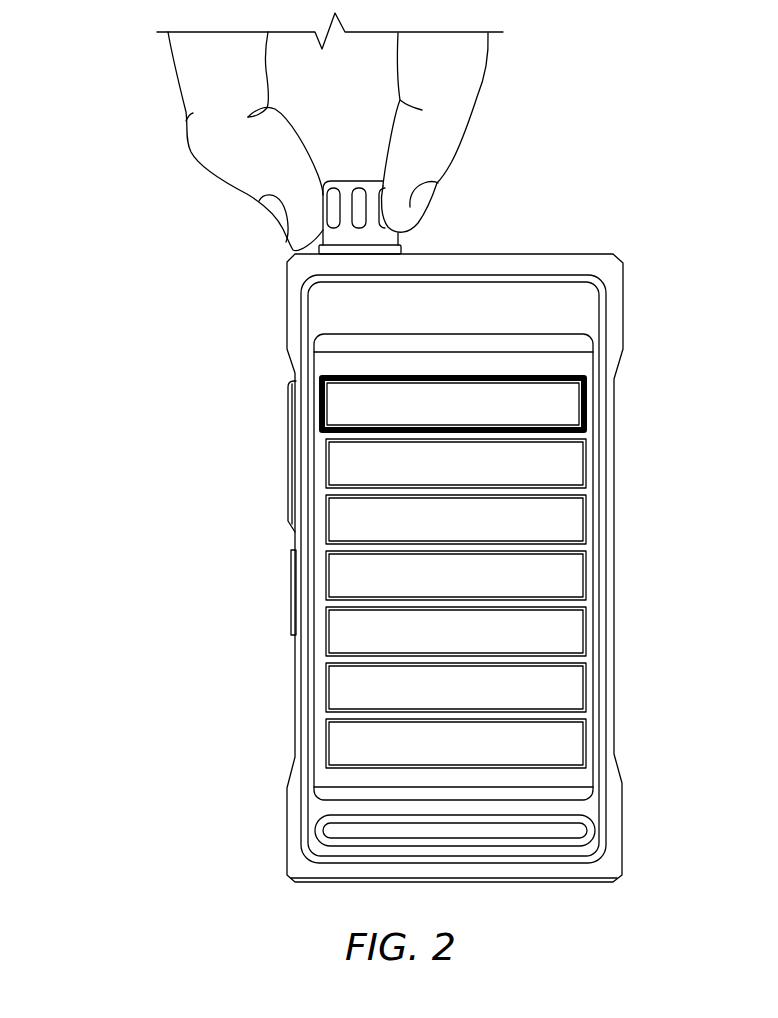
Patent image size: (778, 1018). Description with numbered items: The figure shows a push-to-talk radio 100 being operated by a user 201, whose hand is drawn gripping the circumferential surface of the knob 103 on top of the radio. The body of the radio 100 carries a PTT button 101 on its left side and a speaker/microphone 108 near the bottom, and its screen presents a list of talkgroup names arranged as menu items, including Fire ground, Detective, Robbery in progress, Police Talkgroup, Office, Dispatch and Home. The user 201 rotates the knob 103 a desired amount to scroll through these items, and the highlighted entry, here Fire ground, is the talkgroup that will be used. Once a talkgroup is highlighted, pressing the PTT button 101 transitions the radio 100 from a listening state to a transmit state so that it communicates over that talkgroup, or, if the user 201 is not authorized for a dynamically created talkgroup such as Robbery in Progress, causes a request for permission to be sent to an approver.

The push-to-talk radio 100 is at (72, 46).
The PTT button 101 is at (288, 473).
The knob 103 is at (373, 181).
The speaker/microphone 108 is at (343, 832).
The user 201 is at (458, 72).